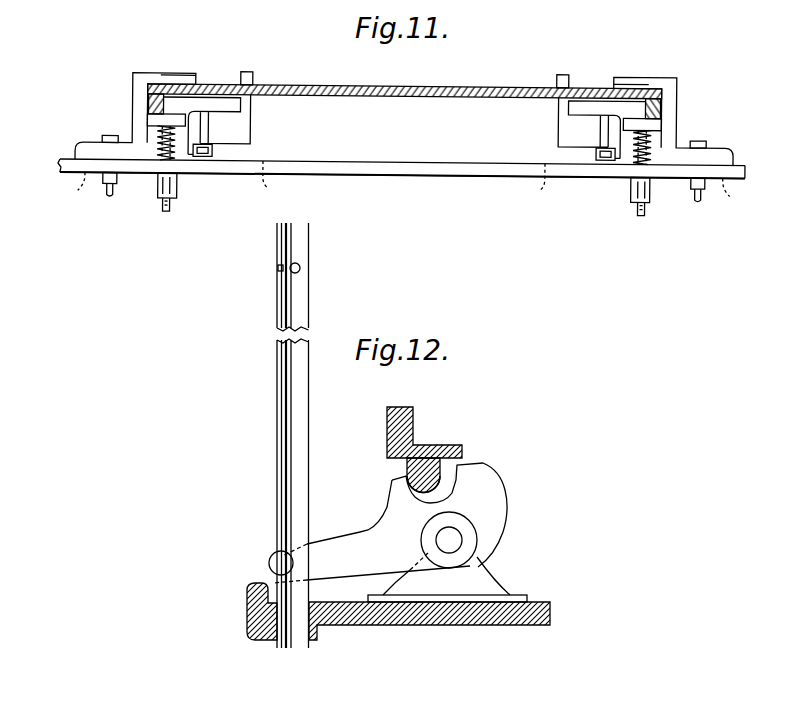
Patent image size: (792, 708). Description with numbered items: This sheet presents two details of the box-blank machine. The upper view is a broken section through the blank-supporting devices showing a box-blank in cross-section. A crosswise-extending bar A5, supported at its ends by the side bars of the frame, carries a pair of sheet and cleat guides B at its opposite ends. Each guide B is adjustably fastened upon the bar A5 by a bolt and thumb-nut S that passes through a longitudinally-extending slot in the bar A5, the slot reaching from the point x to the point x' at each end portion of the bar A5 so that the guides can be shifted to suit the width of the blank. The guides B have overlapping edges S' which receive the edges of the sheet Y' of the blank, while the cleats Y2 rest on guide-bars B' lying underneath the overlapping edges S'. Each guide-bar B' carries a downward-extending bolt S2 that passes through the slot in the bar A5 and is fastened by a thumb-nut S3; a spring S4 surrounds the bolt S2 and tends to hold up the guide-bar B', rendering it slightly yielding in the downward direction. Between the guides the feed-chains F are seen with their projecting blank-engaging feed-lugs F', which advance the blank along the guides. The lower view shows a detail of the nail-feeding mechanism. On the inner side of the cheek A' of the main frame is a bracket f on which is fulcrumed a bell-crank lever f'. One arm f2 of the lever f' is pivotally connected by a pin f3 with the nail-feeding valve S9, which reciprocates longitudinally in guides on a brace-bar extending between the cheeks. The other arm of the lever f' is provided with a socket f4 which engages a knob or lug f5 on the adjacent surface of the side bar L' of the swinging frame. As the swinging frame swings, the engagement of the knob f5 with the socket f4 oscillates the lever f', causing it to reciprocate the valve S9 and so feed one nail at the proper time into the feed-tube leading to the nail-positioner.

In FIG. 11, the crosswise-extending bar A5 is at (418, 160).
In FIG. 11, the sheet Y' is at (405, 73).
In FIG. 11, the sheet and cleat guide B is at (404, 118).
In FIG. 11, the cleat Y2 is at (148, 108).
In FIG. 11, the guide-bar B' is at (407, 128).
In FIG. 11, the overlapping edge S' is at (405, 68).
In FIG. 11, the feed-lug F' is at (404, 115).
In FIG. 11, the feed-chain F is at (404, 151).
In FIG. 11, the bolt S2 is at (176, 158).
In FIG. 11, the spring S4 is at (153, 160).
In FIG. 11, the thumb-nut S3 is at (173, 207).
In FIG. 11, the bolt and thumb-nut S is at (415, 194).
In FIG. 11, the slot end point x is at (409, 190).
In FIG. 11, the slot end point x' is at (404, 181).
In FIG. 12, the nail-feeding valve S9 is at (282, 403).
In FIG. 12, the cheek A' is at (398, 618).
In FIG. 12, the side bar L' is at (424, 450).
In FIG. 12, the knob f5 is at (408, 474).
In FIG. 12, the bell-crank lever f' is at (441, 515).
In FIG. 12, the socket f4 is at (453, 483).
In FIG. 12, the lever arm f2 is at (328, 548).
In FIG. 12, the pin f3 is at (283, 563).
In FIG. 12, the bracket f is at (447, 557).